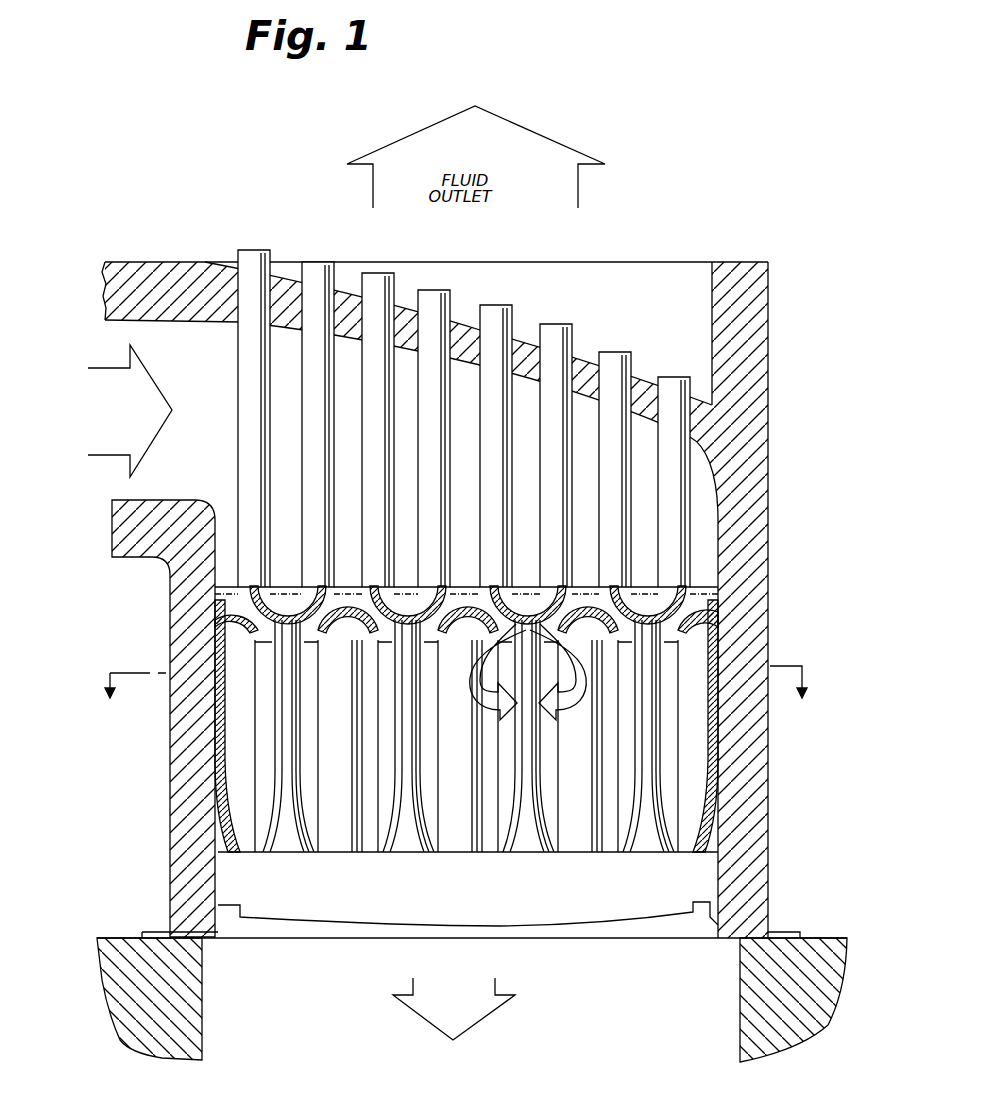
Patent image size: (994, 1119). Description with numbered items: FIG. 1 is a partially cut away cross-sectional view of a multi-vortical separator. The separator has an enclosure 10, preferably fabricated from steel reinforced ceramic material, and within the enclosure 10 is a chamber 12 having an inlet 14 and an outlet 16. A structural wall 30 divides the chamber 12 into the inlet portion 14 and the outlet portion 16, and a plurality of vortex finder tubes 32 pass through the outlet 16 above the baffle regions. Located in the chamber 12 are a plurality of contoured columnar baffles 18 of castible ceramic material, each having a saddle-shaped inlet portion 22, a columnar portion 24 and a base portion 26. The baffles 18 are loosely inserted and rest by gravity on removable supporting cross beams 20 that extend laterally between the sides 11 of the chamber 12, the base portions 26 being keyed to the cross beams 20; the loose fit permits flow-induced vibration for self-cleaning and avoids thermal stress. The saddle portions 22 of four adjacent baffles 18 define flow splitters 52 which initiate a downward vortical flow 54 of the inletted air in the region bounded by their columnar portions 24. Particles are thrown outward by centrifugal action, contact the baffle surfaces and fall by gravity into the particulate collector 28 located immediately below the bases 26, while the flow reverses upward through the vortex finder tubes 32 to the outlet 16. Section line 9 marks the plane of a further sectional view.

The section line 9- 9 is at (455, 670).
The enclosure 10 is at (768, 402).
The sides of chamber 11 is at (227, 875).
The chamber 12 is at (650, 487).
The inlet 14 is at (183, 420).
The outlet 16 is at (682, 240).
The contoured columnar baffles 18 is at (400, 758).
The removable supporting cross beams 20 is at (617, 912).
The saddle-shaped inlet portion 22 is at (447, 595).
The columnar portion 24 is at (442, 777).
The base portion 26 is at (527, 855).
The particulate collector 28 is at (570, 1026).
The structural wall 30 is at (517, 345).
The vortex finder tubes 32 is at (450, 290).
The flow splitters 52 is at (368, 590).
The flow 54 is at (493, 706).